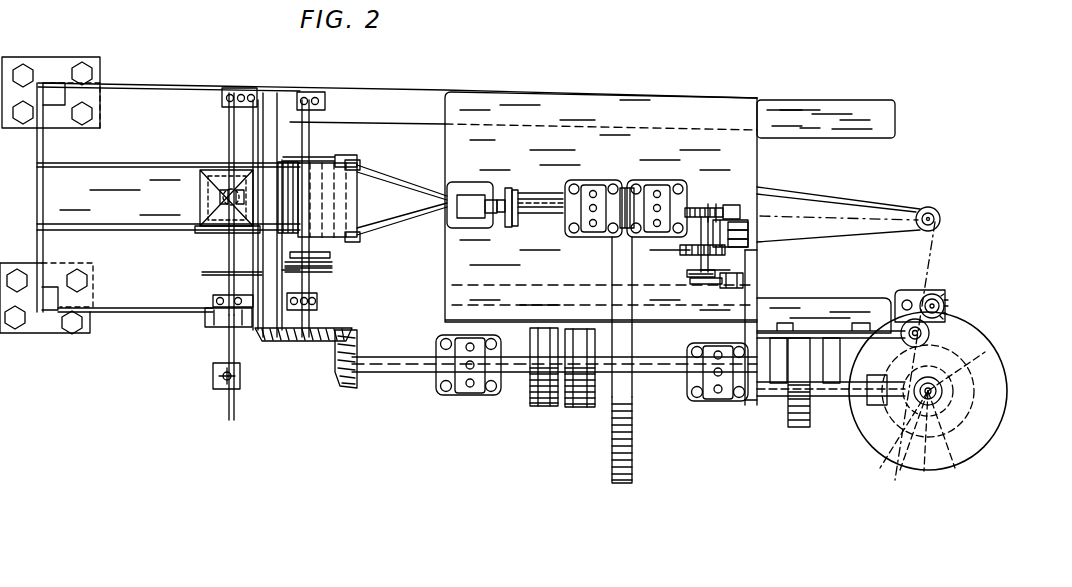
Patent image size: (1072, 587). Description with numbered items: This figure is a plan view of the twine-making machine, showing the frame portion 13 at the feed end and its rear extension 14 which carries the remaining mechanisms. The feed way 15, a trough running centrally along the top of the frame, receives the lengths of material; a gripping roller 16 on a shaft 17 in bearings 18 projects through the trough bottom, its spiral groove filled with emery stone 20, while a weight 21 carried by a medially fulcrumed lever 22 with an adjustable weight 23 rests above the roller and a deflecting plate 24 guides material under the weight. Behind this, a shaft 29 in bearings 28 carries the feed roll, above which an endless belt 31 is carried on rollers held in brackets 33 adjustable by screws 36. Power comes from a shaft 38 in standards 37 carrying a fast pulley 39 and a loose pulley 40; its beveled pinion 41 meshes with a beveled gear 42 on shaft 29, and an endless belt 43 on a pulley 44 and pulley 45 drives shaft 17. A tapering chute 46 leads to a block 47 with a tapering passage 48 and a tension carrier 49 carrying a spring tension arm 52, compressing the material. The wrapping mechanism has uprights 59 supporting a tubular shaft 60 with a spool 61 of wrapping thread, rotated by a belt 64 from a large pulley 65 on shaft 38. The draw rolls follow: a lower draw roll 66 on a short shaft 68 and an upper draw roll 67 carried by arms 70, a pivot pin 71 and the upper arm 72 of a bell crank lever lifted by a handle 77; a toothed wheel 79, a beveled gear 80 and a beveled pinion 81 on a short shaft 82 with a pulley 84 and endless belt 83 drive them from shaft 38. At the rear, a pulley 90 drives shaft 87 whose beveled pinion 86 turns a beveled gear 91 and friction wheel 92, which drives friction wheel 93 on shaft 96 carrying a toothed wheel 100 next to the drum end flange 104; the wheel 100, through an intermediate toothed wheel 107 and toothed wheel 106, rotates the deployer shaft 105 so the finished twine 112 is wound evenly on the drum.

The frame portion 13 is at (162, 313).
The rear extension 14 is at (796, 106).
The feed way 15 is at (126, 164).
The gripping roller 16 is at (218, 196).
The shaft 17 is at (228, 252).
The bearings 18 is at (252, 93).
The emery stone 20 is at (225, 187).
The weight 21 is at (214, 232).
The lever 22 is at (228, 346).
The adjustable weight 23 is at (240, 376).
The deflecting plate 24 is at (224, 203).
The bearings 28 is at (320, 94).
The shaft 29 is at (318, 257).
The endless belt 31 is at (360, 166).
The brackets 33 is at (332, 158).
The screws 36 is at (280, 150).
The standards 37 is at (476, 392).
The shaft 38 is at (410, 374).
The fast pulley 39 is at (545, 404).
The loose pulley 40 is at (580, 404).
The beveled pinion 41 is at (348, 390).
The beveled gear 42 is at (278, 342).
The endless belt 43 is at (333, 265).
The pulley 44 is at (330, 272).
The pulley 45 is at (202, 274).
The chute 46 is at (404, 226).
The block 47 is at (468, 188).
The tapering passage 48 is at (491, 214).
The tension carrier 49 is at (506, 195).
The spring tension arm 52 is at (515, 227).
The uprights 59 is at (606, 188).
The tubular shaft 60 is at (692, 208).
The spool 61 is at (545, 214).
The belt 64 is at (633, 311).
The large pulley 65 is at (633, 452).
The lower draw roll 66 is at (728, 205).
The upper draw roll 67 is at (733, 209).
The short shaft 68 is at (698, 254).
The arms 70 is at (732, 242).
The pivot pin 71 is at (750, 244).
The upper arm 72 is at (742, 224).
The handle 77 is at (748, 233).
The toothed wheel 79 is at (712, 258).
The beveled gear 80 is at (704, 278).
The beveled pinion 81 is at (718, 285).
The short shaft 82 is at (748, 280).
The endless belt 83 is at (754, 312).
The pulley 84 is at (793, 306).
The beveled pinion 86 is at (897, 434).
The shaft 87 is at (843, 398).
The pulley 90 is at (790, 425).
The beveled gear 91 is at (927, 440).
The friction wheel 92 is at (908, 440).
The friction wheel 93 is at (988, 350).
The shaft 96 is at (951, 438).
The toothed wheel 100 is at (965, 425).
The end flange 104 is at (1000, 386).
The deployer shaft 105 is at (946, 303).
The toothed wheel 106 is at (940, 294).
The intermediate toothed wheel 107 is at (930, 332).
The twine 112 is at (935, 238).